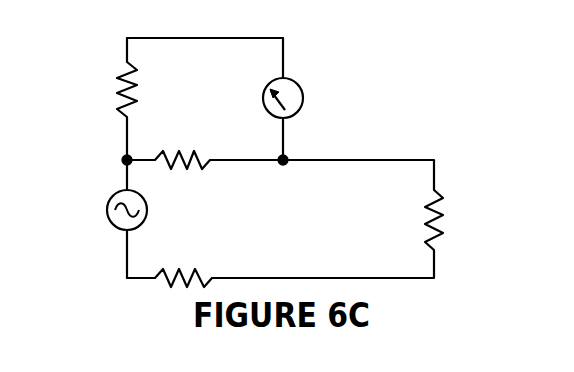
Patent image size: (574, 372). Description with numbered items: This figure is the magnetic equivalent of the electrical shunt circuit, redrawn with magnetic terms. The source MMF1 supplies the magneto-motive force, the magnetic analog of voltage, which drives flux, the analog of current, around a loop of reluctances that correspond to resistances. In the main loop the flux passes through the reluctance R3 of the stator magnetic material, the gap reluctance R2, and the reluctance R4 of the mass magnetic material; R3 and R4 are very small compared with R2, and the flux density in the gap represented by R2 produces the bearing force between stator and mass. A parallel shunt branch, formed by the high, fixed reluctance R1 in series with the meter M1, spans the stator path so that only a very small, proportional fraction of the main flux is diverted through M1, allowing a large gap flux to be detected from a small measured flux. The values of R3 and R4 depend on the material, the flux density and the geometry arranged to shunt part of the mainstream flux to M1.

The reluctance of the shunt path R1 is at (108, 89).
The reluctance of the gap R2 is at (452, 220).
The reluctance of the stator magnetic material R3 is at (182, 146).
The reluctance of the mass magnetic material R4 is at (183, 265).
The flux meter M1 is at (302, 98).
The magneto-motive force source MMF1 is at (95, 210).